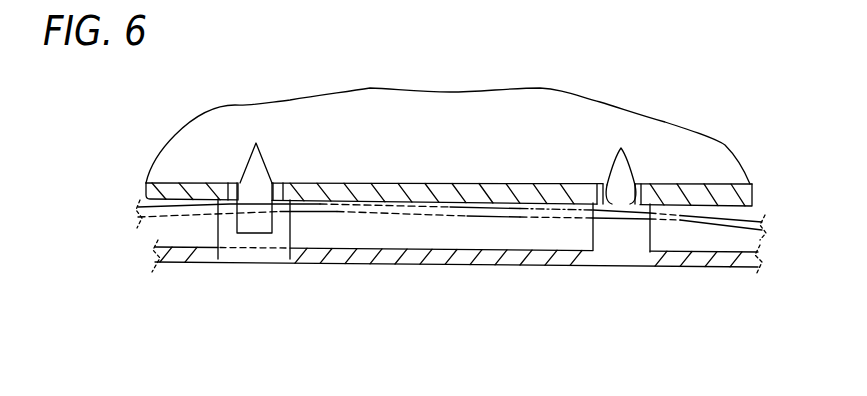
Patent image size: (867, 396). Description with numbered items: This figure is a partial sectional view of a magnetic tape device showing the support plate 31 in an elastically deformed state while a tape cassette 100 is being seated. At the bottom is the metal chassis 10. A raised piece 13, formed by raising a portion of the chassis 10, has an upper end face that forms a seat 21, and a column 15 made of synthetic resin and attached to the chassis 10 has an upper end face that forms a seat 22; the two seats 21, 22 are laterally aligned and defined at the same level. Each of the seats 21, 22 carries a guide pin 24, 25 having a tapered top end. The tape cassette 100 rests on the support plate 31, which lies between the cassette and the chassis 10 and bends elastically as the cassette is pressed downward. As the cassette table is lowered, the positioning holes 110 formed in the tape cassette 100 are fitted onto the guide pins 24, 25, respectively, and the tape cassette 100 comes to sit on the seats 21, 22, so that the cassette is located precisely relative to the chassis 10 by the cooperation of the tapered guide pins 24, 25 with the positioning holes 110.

The chassis 10 is at (710, 267).
The raised piece 13 is at (279, 237).
The column 15 is at (622, 233).
The seat 21 is at (287, 184).
The seat 22 is at (609, 187).
The guide pin 24 is at (259, 157).
The guide pin 25 is at (617, 166).
The support plate 31 is at (682, 222).
The tape cassette 100 is at (633, 110).
The positioning hole 110 is at (240, 182).